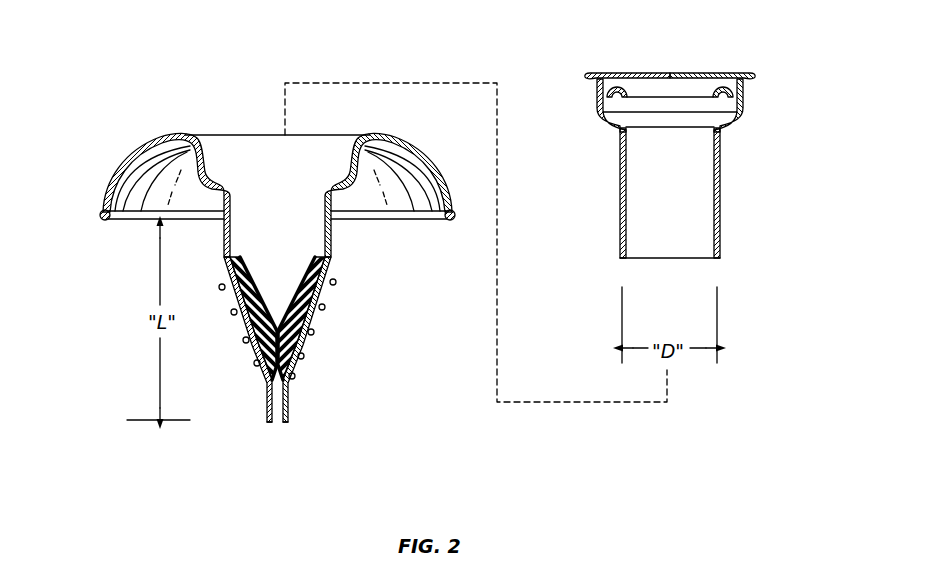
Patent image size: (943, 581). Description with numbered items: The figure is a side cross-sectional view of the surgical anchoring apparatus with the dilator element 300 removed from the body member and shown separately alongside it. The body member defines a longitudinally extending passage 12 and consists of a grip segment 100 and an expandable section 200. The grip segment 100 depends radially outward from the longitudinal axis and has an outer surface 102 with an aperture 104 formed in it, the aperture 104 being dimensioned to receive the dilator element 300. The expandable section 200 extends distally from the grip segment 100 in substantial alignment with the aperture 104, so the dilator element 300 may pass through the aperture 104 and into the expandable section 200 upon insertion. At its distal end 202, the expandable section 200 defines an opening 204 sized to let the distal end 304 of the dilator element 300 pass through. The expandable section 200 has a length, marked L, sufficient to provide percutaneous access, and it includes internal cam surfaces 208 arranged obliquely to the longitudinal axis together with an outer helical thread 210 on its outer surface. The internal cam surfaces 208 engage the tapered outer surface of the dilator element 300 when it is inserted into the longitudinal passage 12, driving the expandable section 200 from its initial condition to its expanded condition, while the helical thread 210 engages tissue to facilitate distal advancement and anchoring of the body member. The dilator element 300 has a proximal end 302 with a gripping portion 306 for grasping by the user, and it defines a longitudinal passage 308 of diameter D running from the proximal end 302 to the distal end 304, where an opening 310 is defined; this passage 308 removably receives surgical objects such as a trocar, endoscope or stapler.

The longitudinally extending passage 12 is at (248, 226).
The grip segment 100 is at (105, 167).
The outer surface 102 is at (102, 212).
The aperture 104 is at (245, 145).
The expandable section 200 is at (336, 320).
The distal end 202 is at (333, 232).
The opening 204 is at (270, 425).
The internal cam surfaces 208 is at (335, 302).
The outer helical thread 210 is at (323, 332).
The dilator element 300 is at (751, 50).
The proximal end 302 is at (756, 107).
The distal end 304 is at (726, 245).
The gripping portion 306 is at (601, 92).
The longitudinal passage 308 is at (700, 167).
The opening 310 is at (680, 262).